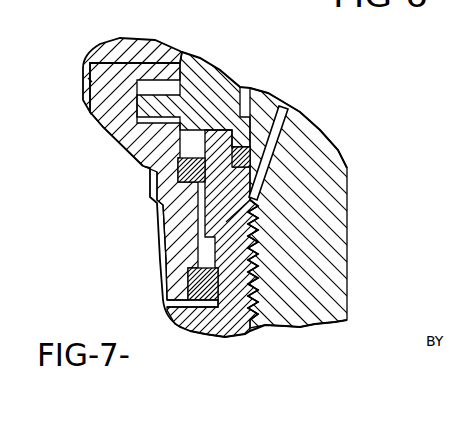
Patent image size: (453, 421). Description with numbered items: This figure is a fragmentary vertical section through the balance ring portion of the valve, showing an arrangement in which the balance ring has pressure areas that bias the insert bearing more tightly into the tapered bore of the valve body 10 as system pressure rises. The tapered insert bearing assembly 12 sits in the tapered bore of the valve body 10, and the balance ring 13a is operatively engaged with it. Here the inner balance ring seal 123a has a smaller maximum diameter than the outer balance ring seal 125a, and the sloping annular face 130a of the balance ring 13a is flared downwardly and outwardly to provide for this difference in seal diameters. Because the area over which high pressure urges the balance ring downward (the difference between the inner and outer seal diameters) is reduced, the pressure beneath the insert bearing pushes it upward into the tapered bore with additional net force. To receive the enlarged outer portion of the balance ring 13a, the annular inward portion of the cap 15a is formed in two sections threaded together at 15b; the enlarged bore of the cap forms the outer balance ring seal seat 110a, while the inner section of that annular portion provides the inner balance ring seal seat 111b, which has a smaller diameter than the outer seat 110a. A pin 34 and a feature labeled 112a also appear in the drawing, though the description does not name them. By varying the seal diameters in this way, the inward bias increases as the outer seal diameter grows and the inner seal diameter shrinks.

The valve body 10 is at (331, 163).
The tapered insert bearing assembly 12 is at (196, 73).
The balance ring 13a is at (143, 150).
The cap 15a is at (243, 314).
The threaded joint 15b is at (158, 230).
The locking pin 34 is at (285, 107).
The outer balance ring seal seat 110a is at (215, 246).
The inner balance ring seal seat 111b is at (212, 95).
The shoulder 112a is at (240, 220).
The inner balance ring seal 123a is at (180, 176).
The outer balance ring seal 125a is at (166, 300).
The sloping annular face 130a is at (200, 246).